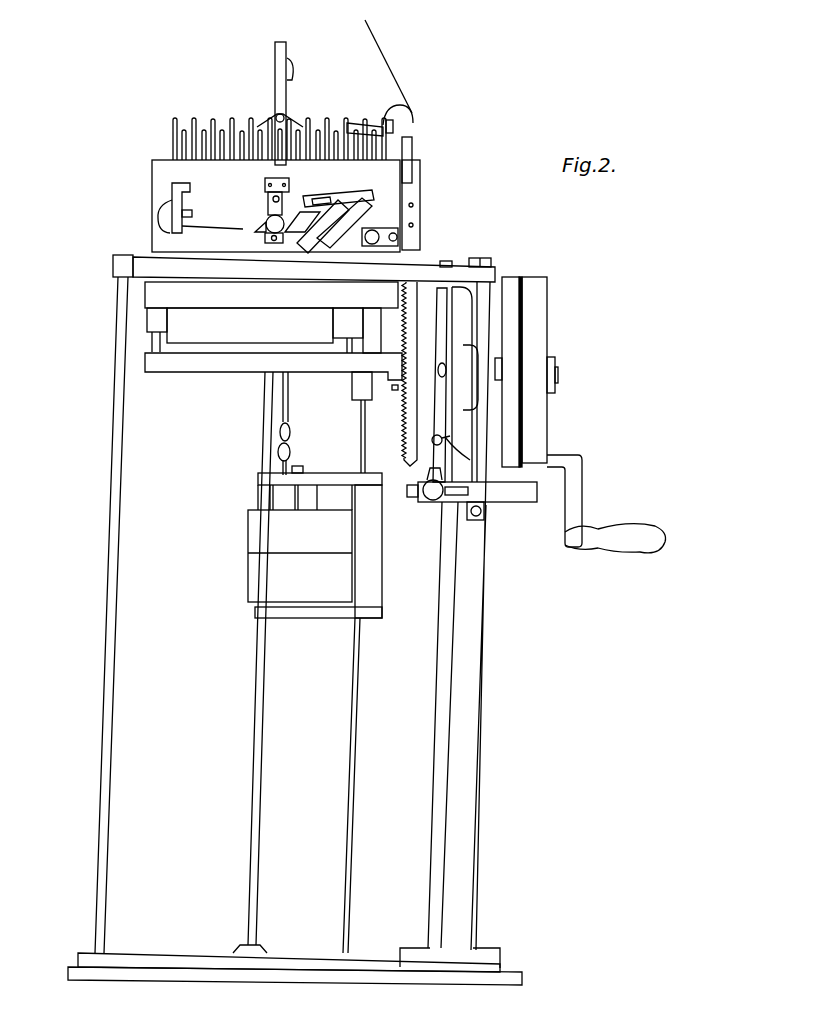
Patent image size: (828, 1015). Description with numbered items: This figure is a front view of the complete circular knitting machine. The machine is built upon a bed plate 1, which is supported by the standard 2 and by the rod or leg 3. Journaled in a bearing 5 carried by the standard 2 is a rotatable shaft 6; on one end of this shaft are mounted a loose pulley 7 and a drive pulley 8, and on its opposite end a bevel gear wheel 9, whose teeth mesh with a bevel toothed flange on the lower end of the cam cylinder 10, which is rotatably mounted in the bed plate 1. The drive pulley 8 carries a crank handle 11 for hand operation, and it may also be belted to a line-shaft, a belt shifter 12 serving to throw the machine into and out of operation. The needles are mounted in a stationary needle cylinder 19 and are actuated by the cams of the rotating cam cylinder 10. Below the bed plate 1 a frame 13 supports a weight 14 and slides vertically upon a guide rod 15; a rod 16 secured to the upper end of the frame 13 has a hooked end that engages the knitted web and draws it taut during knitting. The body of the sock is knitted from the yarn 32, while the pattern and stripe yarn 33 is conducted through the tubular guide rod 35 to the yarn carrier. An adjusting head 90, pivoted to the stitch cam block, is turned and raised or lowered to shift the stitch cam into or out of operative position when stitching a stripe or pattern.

The bed plate 1 is at (457, 275).
The standard 2 is at (480, 592).
The rod or leg 3 is at (108, 612).
The bearing 5 is at (426, 367).
The rotatable shaft 6 is at (557, 372).
The loose pulley 7 is at (510, 277).
The drive pulley 8 is at (537, 277).
The bevel gear wheel 9 is at (402, 420).
The cam cylinder 10 is at (157, 177).
The crank handle 11 is at (580, 522).
The belt shifter 12 is at (433, 493).
The frame 13 is at (372, 561).
The weight 14 is at (257, 560).
The guide rod 15 is at (358, 685).
The hooked rod 16 is at (288, 400).
The needle cylinder 19 is at (170, 147).
The yarn 32 is at (380, 47).
The pattern and stripe yarn 33 is at (282, 73).
The tubular guide rod 35 is at (276, 52).
The adjusting head 90 is at (162, 213).